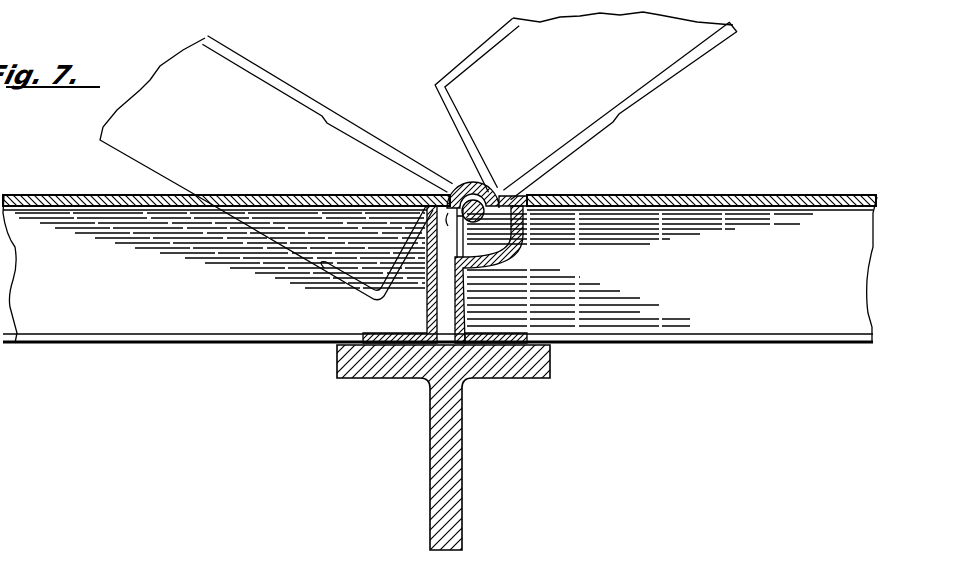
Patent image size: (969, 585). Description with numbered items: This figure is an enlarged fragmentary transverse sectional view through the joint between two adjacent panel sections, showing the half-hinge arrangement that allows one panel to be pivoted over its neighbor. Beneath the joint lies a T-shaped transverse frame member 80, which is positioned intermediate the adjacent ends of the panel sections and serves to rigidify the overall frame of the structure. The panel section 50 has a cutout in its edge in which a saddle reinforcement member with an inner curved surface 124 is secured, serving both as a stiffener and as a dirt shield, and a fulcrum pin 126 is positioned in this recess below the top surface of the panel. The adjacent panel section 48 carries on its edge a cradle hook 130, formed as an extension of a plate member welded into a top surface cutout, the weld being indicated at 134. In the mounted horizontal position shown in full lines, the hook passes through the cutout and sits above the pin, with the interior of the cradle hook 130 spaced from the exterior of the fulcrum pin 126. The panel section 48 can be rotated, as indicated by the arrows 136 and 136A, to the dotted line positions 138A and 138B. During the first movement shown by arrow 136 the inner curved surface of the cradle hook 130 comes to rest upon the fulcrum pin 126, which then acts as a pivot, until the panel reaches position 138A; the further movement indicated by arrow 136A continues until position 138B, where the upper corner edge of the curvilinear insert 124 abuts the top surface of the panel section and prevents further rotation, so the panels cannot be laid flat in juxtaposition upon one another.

The panel section 48 is at (57, 196).
The panel section 50 is at (669, 196).
The T-shaped transverse frame member 80 is at (431, 465).
The saddle reinforcement member with inner curved surface 124 is at (487, 266).
The fulcrum pin 126 is at (515, 250).
The cradle hook 130 is at (472, 183).
The weld 134 is at (275, 196).
The arrow 136 is at (325, 145).
The arrow 136A is at (430, 51).
The dotted line position of panel section 138A is at (227, 48).
The dotted line position of panel section 138B is at (723, 41).